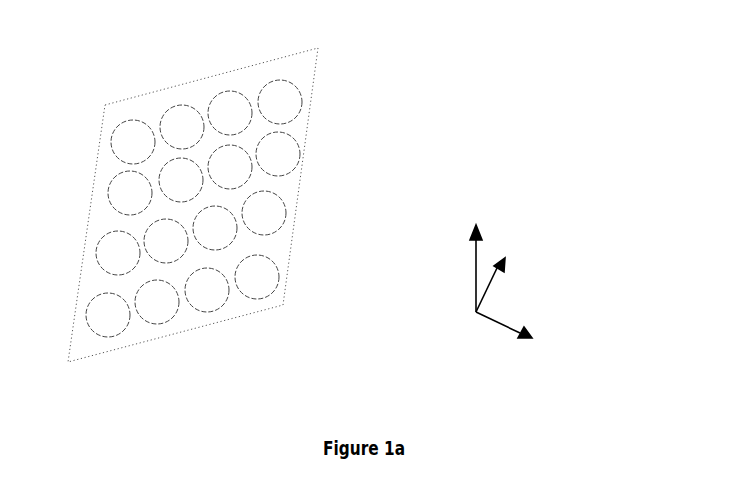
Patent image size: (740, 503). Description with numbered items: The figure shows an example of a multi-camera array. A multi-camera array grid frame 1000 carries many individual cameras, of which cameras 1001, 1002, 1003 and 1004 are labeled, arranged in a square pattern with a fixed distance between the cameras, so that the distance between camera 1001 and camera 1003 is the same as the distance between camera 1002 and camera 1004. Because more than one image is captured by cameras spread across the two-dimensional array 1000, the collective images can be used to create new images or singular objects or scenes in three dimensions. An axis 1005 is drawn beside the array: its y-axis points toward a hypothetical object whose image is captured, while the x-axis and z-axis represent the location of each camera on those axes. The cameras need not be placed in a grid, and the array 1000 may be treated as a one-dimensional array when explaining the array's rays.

The multi-camera array grid frame 1000 is at (310, 73).
The camera 1001 is at (135, 145).
The camera 1002 is at (223, 239).
The camera 1003 is at (230, 113).
The camera 1004 is at (219, 306).
The axis 1005 is at (550, 272).